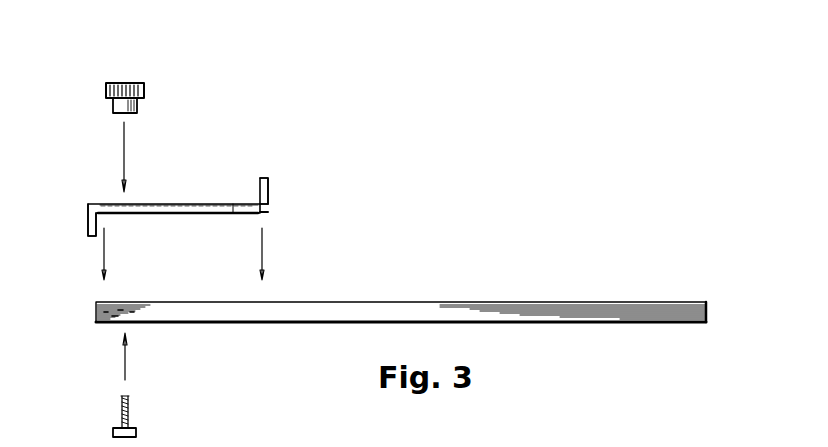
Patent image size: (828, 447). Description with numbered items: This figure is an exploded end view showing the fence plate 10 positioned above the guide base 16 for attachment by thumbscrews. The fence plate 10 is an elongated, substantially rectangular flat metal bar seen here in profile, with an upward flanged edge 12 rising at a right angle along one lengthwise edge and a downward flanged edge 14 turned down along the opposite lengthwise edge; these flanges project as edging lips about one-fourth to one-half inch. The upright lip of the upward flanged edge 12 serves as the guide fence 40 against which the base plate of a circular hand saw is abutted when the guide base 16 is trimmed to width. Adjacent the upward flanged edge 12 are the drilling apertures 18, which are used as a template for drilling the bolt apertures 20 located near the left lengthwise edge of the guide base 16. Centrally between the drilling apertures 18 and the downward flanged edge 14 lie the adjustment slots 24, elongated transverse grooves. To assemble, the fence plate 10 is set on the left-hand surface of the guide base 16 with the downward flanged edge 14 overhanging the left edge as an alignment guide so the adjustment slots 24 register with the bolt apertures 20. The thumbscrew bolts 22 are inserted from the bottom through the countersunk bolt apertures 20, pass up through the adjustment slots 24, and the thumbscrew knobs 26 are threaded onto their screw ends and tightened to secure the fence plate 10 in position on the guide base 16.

The fence plate 10 is at (111, 206).
The upward flanged edge 12 is at (268, 180).
The downward flanged edge 14 is at (87, 235).
The guide base 16 is at (443, 300).
The drilling apertures 18 is at (233, 208).
The bolt apertures 20 is at (125, 306).
The thumbscrew bolts 22 is at (128, 420).
The adjustment slots 24 is at (157, 207).
The thumbscrew knobs 26 is at (125, 82).
The guide fence 40 is at (268, 190).